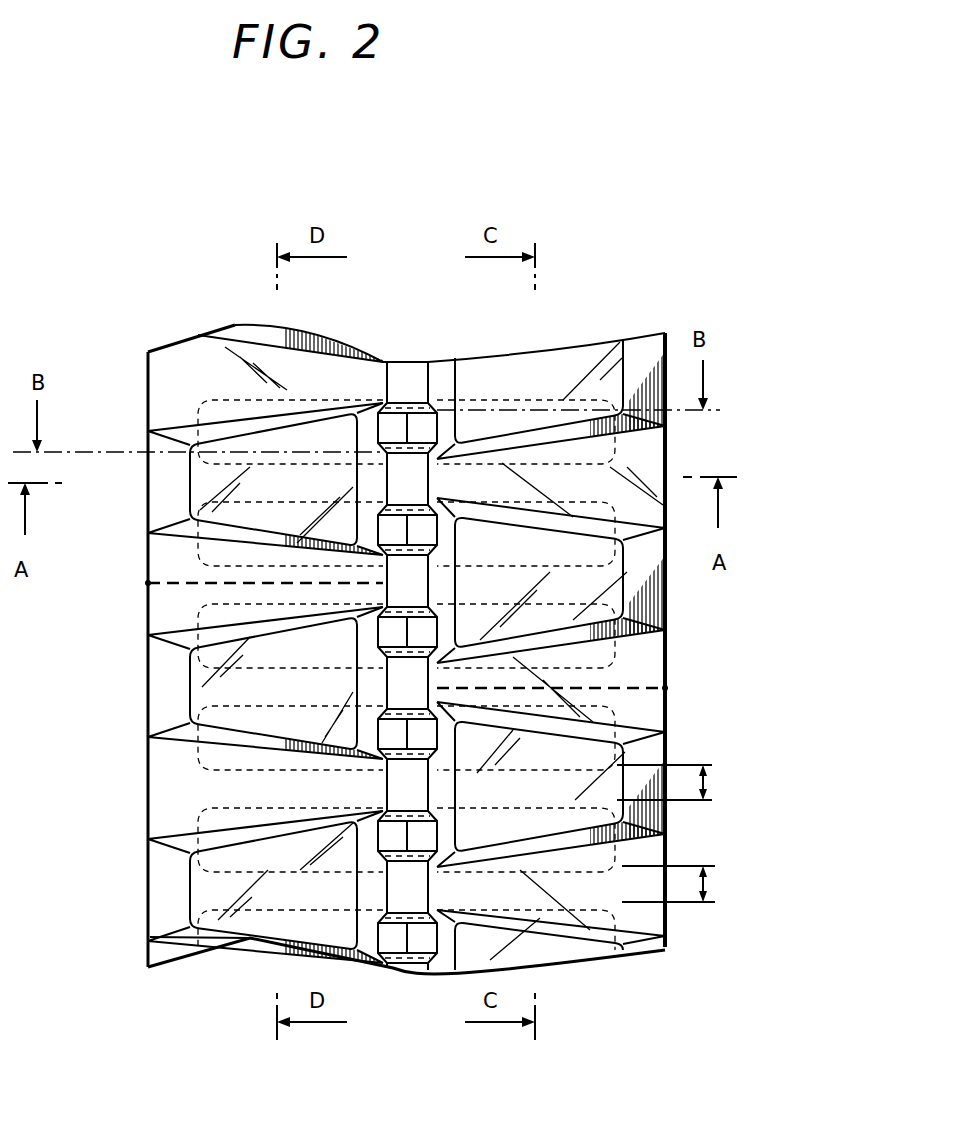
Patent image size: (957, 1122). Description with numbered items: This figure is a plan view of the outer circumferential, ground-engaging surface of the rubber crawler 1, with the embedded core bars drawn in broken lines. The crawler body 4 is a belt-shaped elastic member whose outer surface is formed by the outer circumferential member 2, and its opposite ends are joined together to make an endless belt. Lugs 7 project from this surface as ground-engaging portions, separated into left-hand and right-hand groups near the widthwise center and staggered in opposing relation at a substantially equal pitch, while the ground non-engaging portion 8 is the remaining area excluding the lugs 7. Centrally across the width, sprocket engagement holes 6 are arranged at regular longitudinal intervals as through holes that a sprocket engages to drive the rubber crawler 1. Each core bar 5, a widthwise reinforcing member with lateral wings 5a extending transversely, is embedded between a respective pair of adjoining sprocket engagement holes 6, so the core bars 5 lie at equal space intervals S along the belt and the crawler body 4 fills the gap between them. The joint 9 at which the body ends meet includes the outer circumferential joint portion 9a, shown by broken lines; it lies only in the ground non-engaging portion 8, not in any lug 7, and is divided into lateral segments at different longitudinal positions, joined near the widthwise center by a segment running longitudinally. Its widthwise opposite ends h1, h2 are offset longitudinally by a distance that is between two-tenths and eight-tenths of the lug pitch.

The rubber crawler 1 is at (458, 622).
The outer circumferential member 2 is at (458, 682).
The crawler body 4 is at (656, 962).
The core bar 5 is at (401, 655).
The lateral wing 5a is at (187, 718).
The sprocket engagement hole 6 is at (405, 360).
The lug 7 is at (630, 600).
The ground non-engaging portion 8 is at (637, 467).
The joint 9 is at (407, 675).
The outer circumferential joint portion 9a is at (150, 616).
The widthwise opposite end of the outer circumferential joint portion h1 is at (666, 688).
The widthwise opposite end of the outer circumferential joint portion h2 is at (148, 583).
The space interval S is at (674, 833).